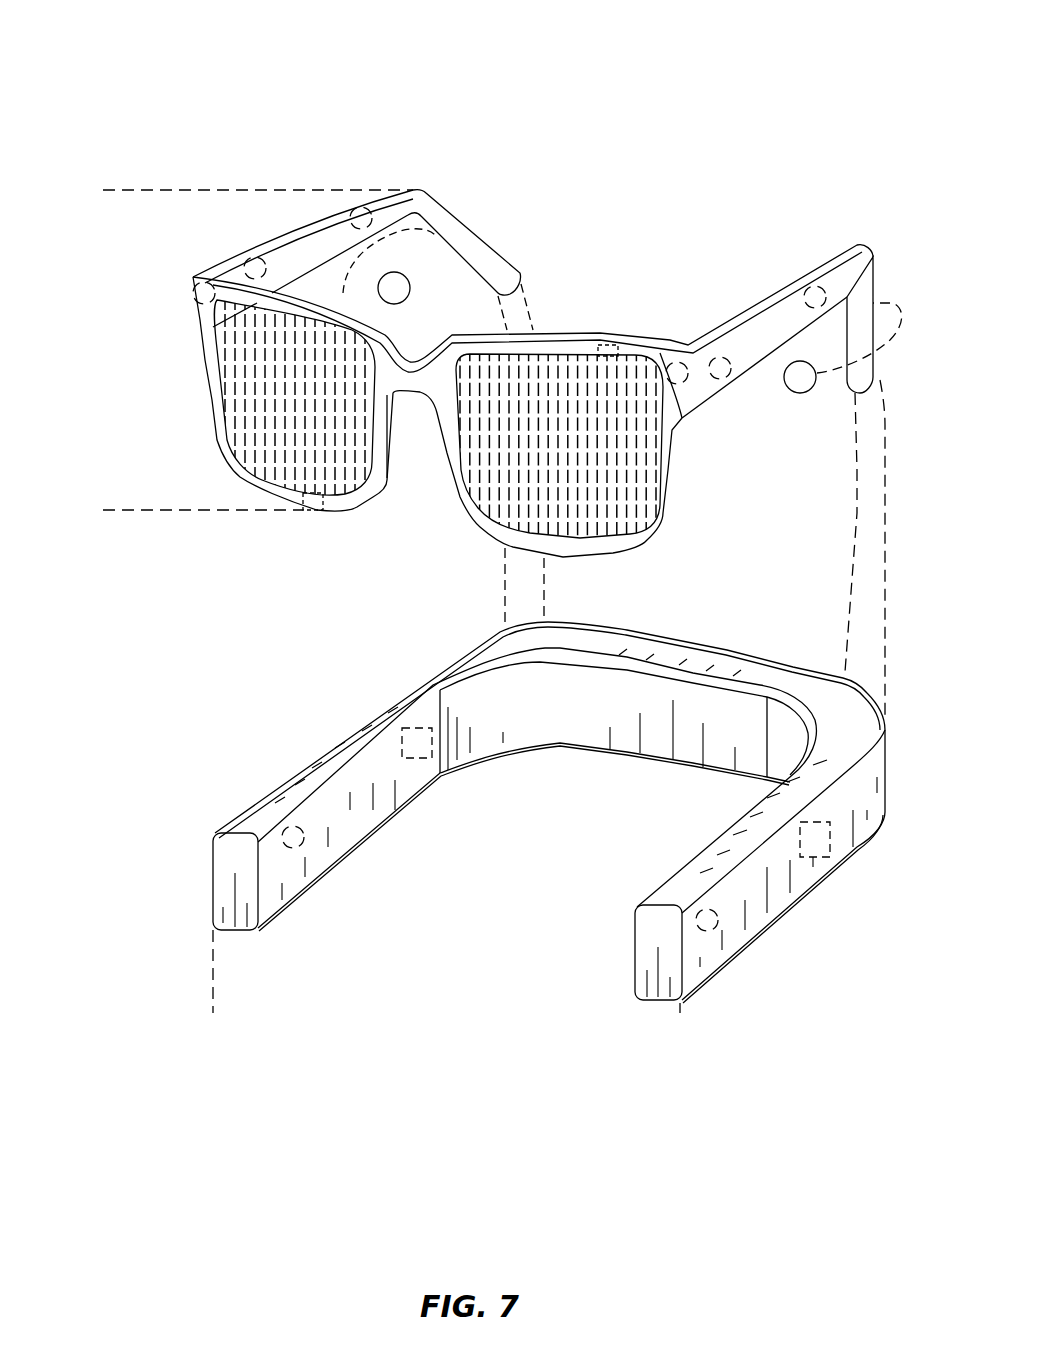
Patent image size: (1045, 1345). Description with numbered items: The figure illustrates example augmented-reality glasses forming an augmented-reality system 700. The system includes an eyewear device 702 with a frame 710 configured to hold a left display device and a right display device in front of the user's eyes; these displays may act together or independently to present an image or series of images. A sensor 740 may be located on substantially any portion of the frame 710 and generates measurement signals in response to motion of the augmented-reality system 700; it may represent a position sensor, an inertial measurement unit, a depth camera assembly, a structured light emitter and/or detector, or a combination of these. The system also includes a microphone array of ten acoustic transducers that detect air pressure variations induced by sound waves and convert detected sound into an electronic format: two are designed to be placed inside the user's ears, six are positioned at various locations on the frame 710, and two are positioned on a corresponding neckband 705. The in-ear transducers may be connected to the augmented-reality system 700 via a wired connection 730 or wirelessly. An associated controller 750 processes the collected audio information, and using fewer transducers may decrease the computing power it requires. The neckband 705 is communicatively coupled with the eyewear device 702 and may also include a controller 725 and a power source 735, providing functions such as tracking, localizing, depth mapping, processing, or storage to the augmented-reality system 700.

The augmented-reality system 700 is at (118, 83).
The eyewear device 702 is at (103, 190).
The neckband 705 is at (680, 1013).
The frame 710 is at (421, 192).
The controller 725 is at (808, 848).
The wired connection 730 is at (873, 566).
The power source 735 is at (407, 757).
The sensor 740 is at (310, 498).
The controller 750 is at (600, 345).